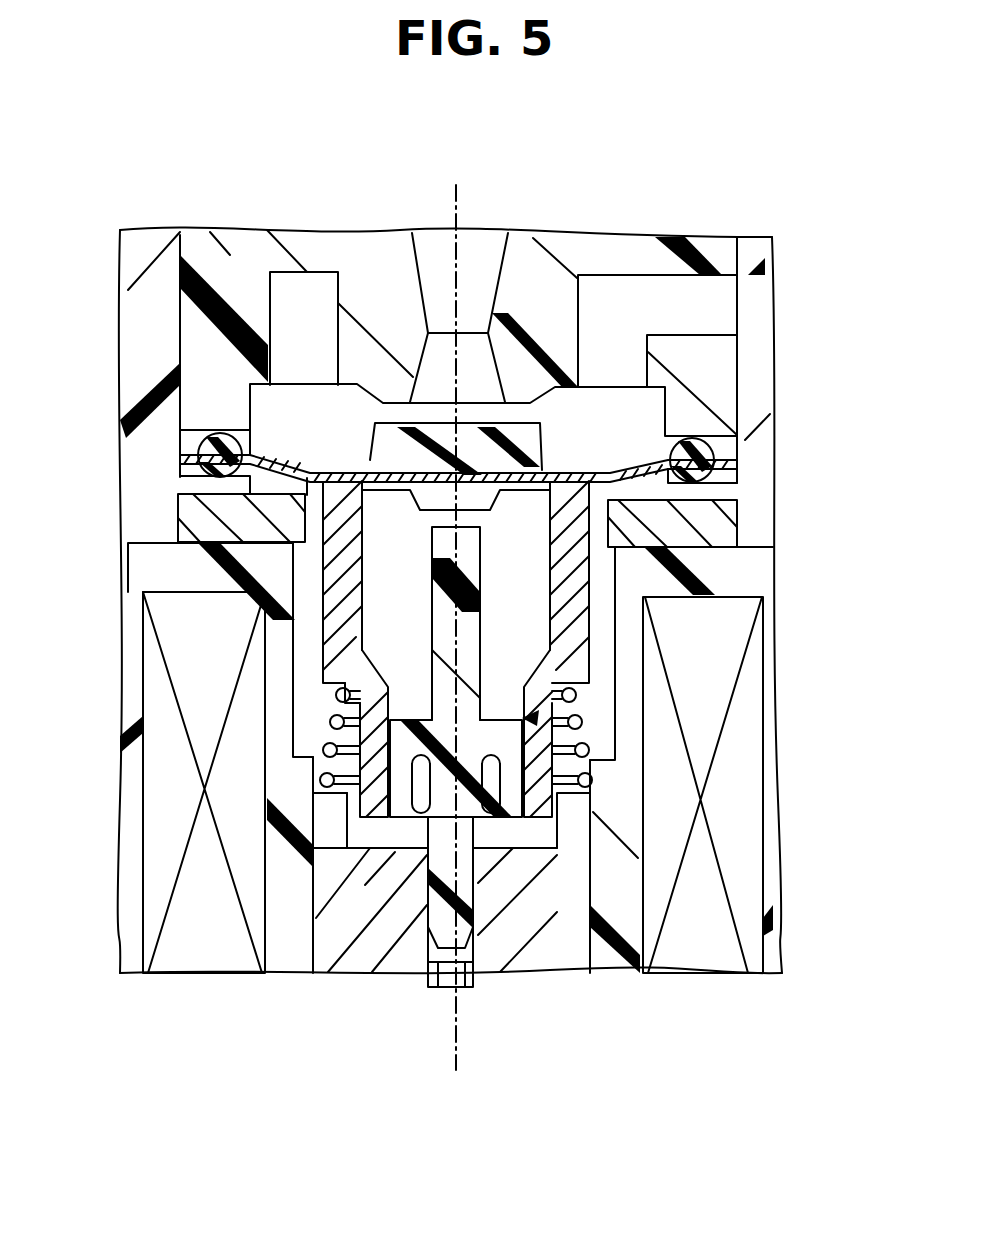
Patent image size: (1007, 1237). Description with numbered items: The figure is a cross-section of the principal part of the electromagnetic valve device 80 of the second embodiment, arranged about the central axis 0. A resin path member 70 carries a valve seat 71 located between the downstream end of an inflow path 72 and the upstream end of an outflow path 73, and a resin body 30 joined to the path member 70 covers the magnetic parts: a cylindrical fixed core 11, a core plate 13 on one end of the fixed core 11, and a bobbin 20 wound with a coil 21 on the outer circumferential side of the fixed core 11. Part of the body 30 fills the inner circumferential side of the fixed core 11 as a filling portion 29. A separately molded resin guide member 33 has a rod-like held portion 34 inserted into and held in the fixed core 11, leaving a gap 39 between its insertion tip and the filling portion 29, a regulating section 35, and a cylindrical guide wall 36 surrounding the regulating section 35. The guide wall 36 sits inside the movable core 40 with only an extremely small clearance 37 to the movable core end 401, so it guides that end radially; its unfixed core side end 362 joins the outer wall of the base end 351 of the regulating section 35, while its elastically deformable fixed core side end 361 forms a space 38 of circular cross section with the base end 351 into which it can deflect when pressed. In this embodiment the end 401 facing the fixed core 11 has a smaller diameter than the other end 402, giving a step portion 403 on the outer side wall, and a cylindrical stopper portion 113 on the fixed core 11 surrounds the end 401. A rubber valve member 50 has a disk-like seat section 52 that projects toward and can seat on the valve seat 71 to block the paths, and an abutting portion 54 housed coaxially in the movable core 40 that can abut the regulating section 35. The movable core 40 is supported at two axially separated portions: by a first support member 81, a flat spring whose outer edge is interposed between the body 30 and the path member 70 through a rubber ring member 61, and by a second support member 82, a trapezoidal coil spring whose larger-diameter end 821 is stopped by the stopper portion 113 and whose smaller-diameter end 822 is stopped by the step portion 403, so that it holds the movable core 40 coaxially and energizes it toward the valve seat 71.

The central axis 0 is at (462, 212).
The fixed core 11 is at (328, 940).
The core plate 13 is at (713, 533).
The bobbin 20 is at (640, 878).
The coil 21 is at (752, 947).
The filling portion 29 is at (441, 975).
The body 30 is at (135, 325).
The guide member 33 is at (538, 718).
The held portion 34 is at (440, 918).
The regulating section 35 is at (470, 557).
The base end 351 is at (486, 790).
The guide wall 36 is at (577, 830).
The fixed core side end 361 is at (400, 832).
The unfixed core side end 362 is at (402, 722).
The clearance 37 is at (350, 832).
The space 38 is at (484, 835).
The gap 39 is at (468, 985).
The movable core 40 is at (334, 622).
The movable core end 401 is at (325, 828).
The other end 402 is at (300, 549).
The step portion 403 is at (338, 682).
The valve member 50 is at (385, 437).
The seat section 52 is at (532, 440).
The abutting portion 54 is at (690, 520).
The rubber ring member 61 is at (724, 440).
The path member 70 is at (632, 240).
The valve seat 71 is at (495, 392).
The inflow path 72 is at (698, 277).
The outflow path 73 is at (418, 262).
The electromagnetic valve device 80 is at (778, 226).
The first support member 81 is at (300, 543).
The second support member 82 is at (332, 722).
The one end 821 is at (582, 782).
The other end 822 is at (560, 702).
The stopper portion 113 is at (627, 863).